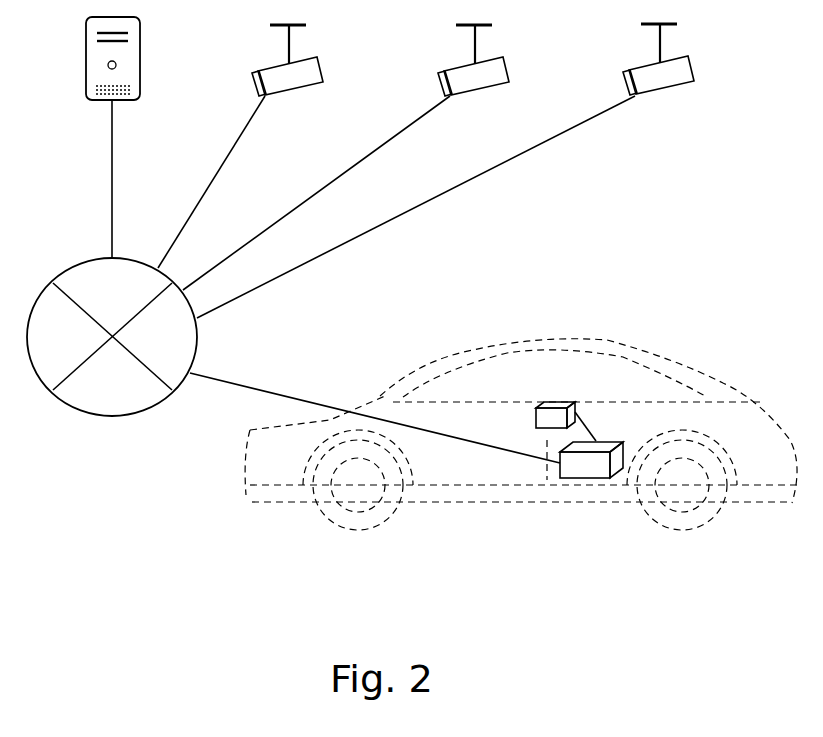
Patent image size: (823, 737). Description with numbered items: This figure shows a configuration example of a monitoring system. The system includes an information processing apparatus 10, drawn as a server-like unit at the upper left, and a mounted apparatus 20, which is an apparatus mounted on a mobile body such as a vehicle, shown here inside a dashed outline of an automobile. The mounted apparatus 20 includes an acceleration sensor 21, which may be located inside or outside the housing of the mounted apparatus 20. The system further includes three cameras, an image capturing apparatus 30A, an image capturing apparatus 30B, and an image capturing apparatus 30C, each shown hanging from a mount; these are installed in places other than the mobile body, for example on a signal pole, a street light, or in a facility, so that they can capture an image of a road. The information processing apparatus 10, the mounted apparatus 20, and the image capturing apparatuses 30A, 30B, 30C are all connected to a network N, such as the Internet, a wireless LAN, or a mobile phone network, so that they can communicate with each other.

The information processing apparatus 10 is at (141, 33).
The image capturing apparatus 30A is at (320, 60).
The image capturing apparatus 30B is at (506, 60).
The image capturing apparatus 30C is at (691, 58).
The network N is at (95, 257).
The acceleration sensor 21 is at (554, 403).
The mounted apparatus 20 is at (598, 480).